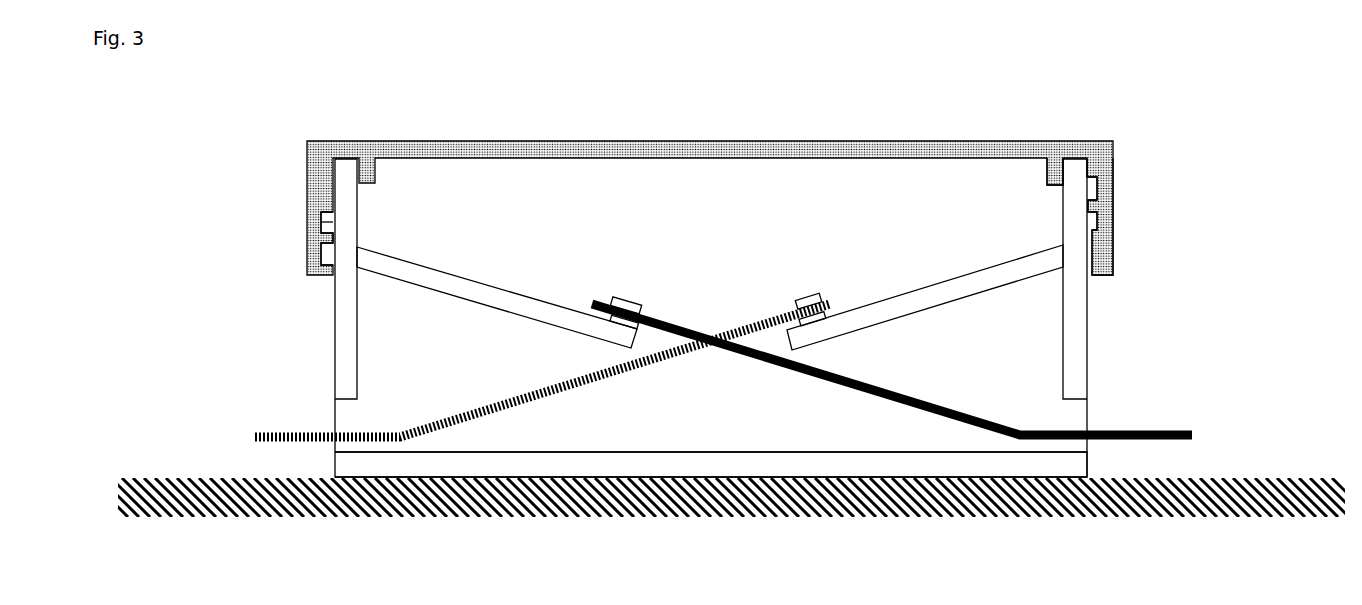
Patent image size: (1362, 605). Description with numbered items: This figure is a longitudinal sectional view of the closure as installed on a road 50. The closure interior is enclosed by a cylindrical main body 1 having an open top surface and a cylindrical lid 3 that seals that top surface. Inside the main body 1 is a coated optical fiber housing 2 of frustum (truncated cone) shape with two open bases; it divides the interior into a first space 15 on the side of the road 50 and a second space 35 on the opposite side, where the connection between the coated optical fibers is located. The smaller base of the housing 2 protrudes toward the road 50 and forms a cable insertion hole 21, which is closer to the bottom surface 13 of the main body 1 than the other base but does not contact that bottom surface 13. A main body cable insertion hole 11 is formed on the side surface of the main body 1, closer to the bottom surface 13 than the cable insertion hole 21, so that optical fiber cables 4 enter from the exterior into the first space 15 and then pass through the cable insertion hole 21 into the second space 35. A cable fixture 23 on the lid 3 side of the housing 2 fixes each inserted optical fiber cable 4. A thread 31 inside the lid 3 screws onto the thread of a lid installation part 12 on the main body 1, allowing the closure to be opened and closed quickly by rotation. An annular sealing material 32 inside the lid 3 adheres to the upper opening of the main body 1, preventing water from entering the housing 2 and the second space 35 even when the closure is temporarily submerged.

The main body 1 is at (1090, 300).
The coated optical fiber housing 2 is at (378, 261).
The lid 3 is at (739, 152).
The optical fiber cable 4 is at (283, 438).
The main body cable insertion hole 11 is at (1087, 423).
The lid installation part 12 is at (325, 222).
The bottom surface 13 is at (1070, 465).
The first space 15 is at (470, 364).
The cable insertion hole 21 is at (723, 372).
The cable fixture 23 is at (627, 297).
The thread 31 is at (1118, 196).
The sealing material 32 is at (1050, 175).
The second space 35 is at (470, 219).
The road 50 is at (935, 500).